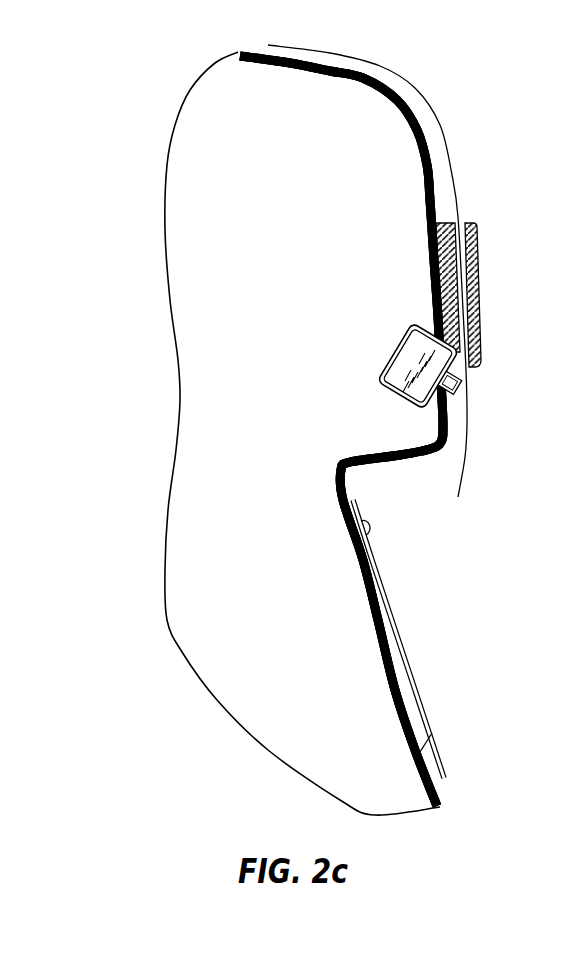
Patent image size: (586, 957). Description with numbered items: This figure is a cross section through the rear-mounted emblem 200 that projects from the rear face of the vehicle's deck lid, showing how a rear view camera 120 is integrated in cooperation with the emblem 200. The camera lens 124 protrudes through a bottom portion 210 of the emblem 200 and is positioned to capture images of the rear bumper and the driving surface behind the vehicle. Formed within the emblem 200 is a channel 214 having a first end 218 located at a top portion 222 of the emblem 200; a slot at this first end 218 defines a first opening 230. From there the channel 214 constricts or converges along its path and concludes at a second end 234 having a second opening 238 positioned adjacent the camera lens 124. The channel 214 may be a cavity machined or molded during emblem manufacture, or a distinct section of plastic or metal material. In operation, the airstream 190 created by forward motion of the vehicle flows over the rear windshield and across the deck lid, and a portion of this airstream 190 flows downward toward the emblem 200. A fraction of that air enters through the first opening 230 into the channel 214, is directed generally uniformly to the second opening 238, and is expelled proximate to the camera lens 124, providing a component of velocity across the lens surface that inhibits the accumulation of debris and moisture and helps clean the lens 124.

The airstream 190 is at (414, 90).
The camera lens 124 is at (371, 411).
The emblem 200 is at (498, 261).
The channel 214 is at (462, 302).
The first end 218 is at (468, 223).
The top portion 222 is at (476, 203).
The first opening 230 is at (461, 266).
The rear view camera 120 is at (382, 393).
The second end 234 is at (470, 377).
The second opening 238 is at (472, 378).
The bottom portion 210 is at (494, 407).